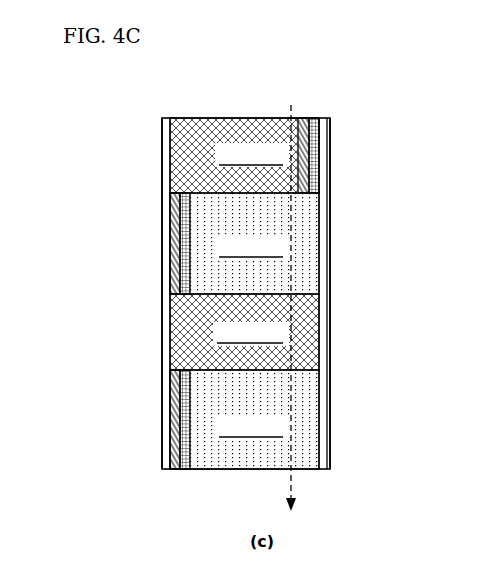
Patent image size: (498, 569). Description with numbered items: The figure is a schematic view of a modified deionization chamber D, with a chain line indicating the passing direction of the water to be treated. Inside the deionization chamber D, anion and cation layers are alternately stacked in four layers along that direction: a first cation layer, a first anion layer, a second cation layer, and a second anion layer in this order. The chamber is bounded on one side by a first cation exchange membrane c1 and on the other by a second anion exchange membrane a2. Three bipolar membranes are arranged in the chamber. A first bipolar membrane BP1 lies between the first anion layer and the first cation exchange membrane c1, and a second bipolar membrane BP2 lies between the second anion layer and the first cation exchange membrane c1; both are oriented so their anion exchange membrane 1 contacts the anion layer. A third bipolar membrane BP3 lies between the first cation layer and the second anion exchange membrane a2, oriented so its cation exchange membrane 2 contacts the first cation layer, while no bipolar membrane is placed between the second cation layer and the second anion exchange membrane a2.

The deionization chamber D is at (236, 108).
The first cation exchange membrane c1 is at (163, 135).
The second anion exchange membrane a2 is at (327, 303).
The anion exchange membrane 1 is at (318, 118).
The cation exchange membrane 2 is at (303, 195).
The first bipolar membrane BP1 is at (176, 243).
The second bipolar membrane BP2 is at (176, 419).
The third bipolar membrane BP3 is at (376, 115).